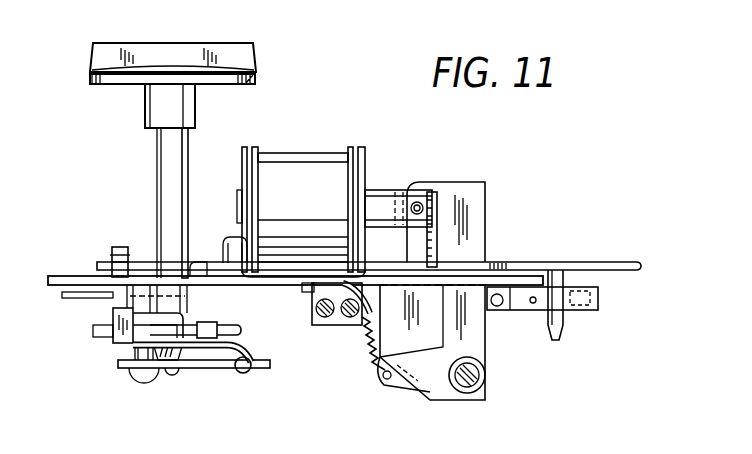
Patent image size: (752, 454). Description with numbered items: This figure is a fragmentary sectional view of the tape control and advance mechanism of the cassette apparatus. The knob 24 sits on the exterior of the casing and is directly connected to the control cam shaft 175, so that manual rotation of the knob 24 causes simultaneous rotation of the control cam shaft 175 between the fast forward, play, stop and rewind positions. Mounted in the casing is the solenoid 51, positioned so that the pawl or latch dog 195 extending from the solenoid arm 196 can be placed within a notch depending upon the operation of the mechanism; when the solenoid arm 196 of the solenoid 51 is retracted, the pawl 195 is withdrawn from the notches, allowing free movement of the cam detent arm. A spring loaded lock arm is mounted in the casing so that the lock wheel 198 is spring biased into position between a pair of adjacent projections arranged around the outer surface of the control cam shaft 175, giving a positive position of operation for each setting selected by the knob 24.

The knob 24 is at (178, 60).
The solenoid 51 is at (300, 178).
The solenoid arm 196 is at (382, 202).
The pawl 195 is at (447, 185).
The lock wheel 198 is at (228, 304).
The control cam shaft 175 is at (238, 322).